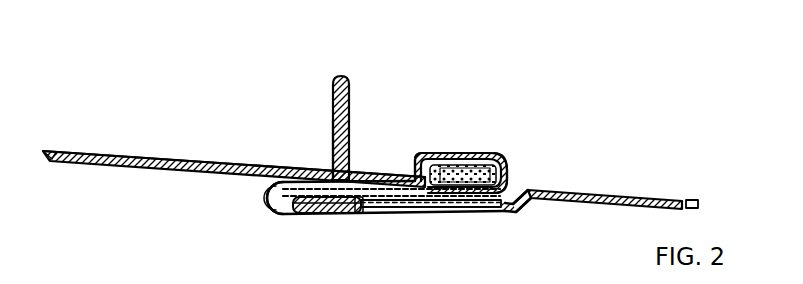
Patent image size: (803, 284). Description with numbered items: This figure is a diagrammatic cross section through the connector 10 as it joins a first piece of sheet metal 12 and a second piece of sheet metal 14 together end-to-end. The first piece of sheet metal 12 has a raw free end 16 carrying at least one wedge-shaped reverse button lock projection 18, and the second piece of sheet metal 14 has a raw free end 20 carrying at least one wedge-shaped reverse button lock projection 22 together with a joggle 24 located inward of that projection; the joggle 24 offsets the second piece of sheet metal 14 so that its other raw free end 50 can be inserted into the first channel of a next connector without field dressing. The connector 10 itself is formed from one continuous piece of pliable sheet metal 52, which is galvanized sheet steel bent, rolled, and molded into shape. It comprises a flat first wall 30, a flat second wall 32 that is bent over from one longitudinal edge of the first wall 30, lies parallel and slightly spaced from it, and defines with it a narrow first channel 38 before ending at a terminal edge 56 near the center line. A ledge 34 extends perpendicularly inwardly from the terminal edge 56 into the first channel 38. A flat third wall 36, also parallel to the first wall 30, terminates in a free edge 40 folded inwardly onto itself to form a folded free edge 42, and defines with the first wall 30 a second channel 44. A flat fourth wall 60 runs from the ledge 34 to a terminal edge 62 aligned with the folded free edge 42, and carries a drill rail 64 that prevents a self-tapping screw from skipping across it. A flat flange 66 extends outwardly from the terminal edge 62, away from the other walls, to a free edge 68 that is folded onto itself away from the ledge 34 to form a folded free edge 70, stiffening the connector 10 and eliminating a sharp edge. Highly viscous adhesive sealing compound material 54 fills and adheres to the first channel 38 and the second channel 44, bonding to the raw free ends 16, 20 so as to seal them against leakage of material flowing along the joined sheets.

The connector 10 is at (283, 53).
The first piece of sheet metal 12 is at (82, 145).
The second piece of sheet metal 14 is at (666, 185).
The raw free end 16 is at (462, 207).
The wedge-shaped reverse button lock projection 18 is at (440, 153).
The raw free end 20 is at (292, 222).
The wedge-shaped reverse button lock projection 22 is at (330, 219).
The joggle 24 is at (530, 206).
The first wall 30 is at (398, 210).
The second wall 32 is at (466, 155).
The ledge 34 is at (400, 170).
The third wall 36 is at (303, 219).
The first channel 38 is at (480, 162).
The free edge 40 is at (393, 238).
The folded free edge 42 is at (358, 220).
The second channel 44 is at (191, 193).
The other raw free end 50 is at (699, 205).
The one continuous piece of pliable sheet metal 52 is at (505, 162).
The adhesive sealing compound material 54 is at (270, 197).
The terminal edge 56 is at (414, 155).
The fourth wall 60 is at (359, 168).
The terminal edge 62 is at (332, 168).
The drill rail 64 is at (384, 168).
The flange 66 is at (333, 138).
The free edge 68 is at (330, 106).
The folded free edge 70 is at (332, 78).